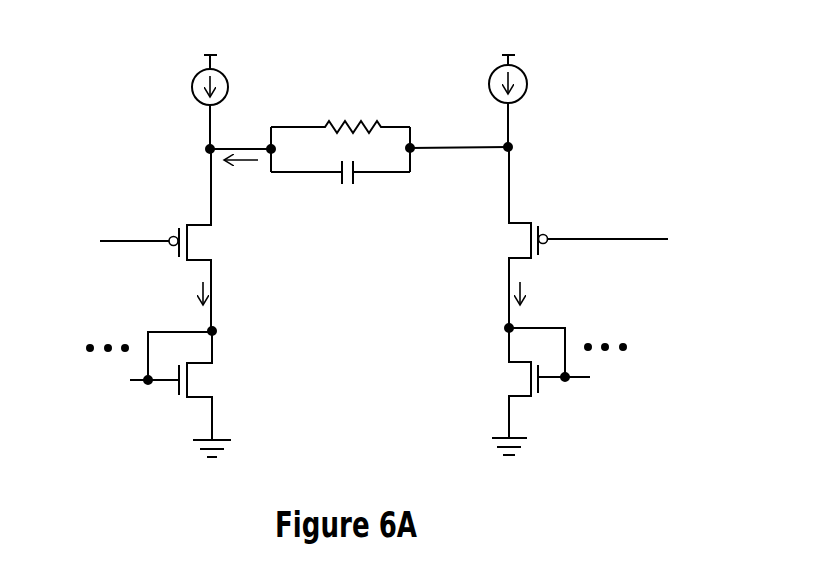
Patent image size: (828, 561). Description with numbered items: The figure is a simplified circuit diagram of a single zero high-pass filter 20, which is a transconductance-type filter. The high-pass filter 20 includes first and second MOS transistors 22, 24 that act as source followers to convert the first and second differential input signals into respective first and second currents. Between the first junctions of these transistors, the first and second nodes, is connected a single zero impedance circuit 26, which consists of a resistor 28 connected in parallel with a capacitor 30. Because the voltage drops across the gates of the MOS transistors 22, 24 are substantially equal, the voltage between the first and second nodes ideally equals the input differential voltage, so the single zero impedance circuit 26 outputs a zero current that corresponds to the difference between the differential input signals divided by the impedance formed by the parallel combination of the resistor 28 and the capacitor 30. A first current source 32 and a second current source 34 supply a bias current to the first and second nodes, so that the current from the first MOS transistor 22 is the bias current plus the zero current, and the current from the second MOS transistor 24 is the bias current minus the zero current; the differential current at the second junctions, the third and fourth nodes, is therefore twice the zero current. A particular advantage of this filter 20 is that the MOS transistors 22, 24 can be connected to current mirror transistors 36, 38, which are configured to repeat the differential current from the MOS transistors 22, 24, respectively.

The single zero high-pass filter 20 is at (396, 259).
The first MOS transistor 22 is at (229, 248).
The second MOS transistor 24 is at (499, 248).
The single zero impedance circuit 26 is at (343, 145).
The resistor 28 is at (372, 110).
The capacitor 30 is at (357, 180).
The first current source 32 is at (192, 90).
The second current source 34 is at (527, 82).
The current mirror transistor 36 is at (233, 378).
The current mirror transistor 38 is at (497, 379).